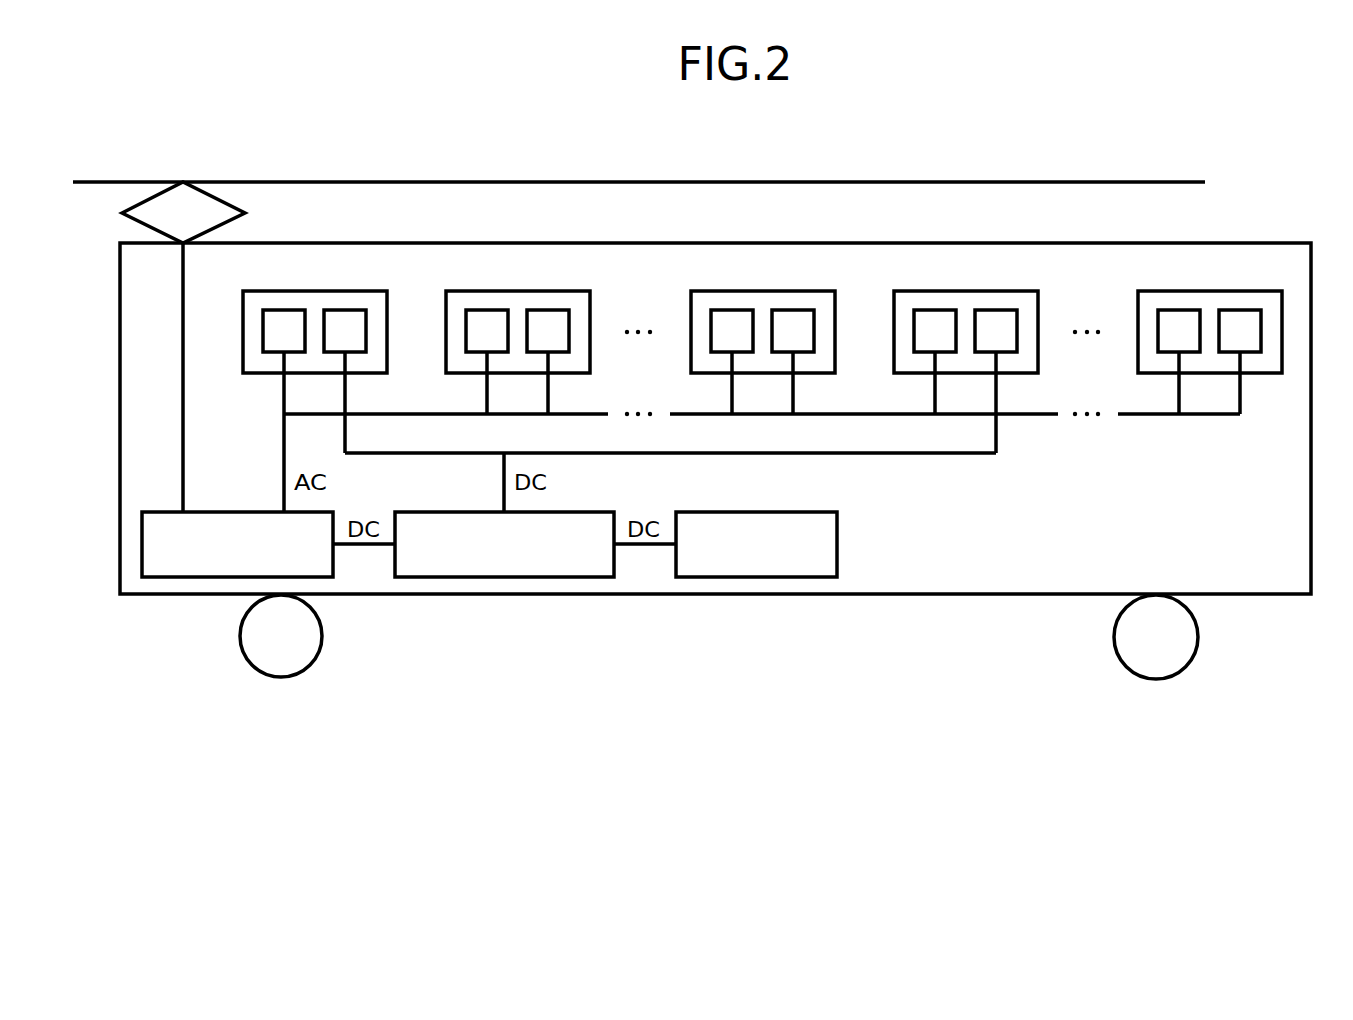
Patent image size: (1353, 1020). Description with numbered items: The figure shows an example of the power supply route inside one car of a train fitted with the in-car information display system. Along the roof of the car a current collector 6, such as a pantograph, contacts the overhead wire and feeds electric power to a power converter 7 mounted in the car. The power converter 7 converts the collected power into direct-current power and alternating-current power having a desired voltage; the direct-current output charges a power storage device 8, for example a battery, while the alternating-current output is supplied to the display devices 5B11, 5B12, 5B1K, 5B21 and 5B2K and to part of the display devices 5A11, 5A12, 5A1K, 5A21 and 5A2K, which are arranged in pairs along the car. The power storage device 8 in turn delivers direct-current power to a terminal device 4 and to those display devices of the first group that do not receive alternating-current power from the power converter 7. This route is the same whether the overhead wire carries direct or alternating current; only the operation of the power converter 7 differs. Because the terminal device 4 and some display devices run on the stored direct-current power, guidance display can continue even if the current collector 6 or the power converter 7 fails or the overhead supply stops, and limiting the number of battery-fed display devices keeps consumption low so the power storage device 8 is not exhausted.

The current collector 6 is at (232, 205).
The power converter 7 is at (245, 492).
The power storage device 8 is at (580, 492).
The terminal device 4 is at (791, 492).
The display device 5A11 is at (285, 309).
The display device 5B11 is at (345, 309).
The display device 5A12 is at (488, 309).
The display device 5B12 is at (548, 309).
The display device 5A1K is at (733, 309).
The display device 5B1K is at (793, 309).
The display device 5A21 is at (936, 309).
The display device 5B21 is at (996, 309).
The display device 5A2K is at (1180, 309).
The display device 5B2K is at (1240, 309).